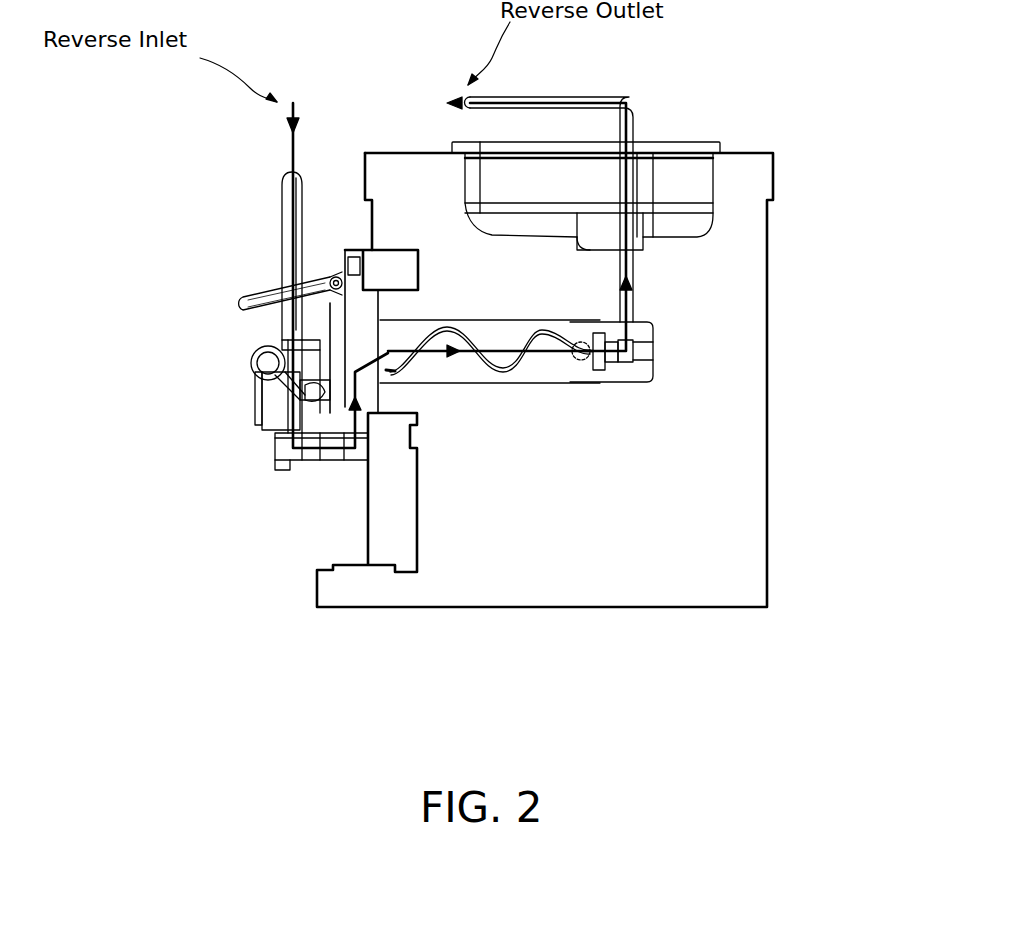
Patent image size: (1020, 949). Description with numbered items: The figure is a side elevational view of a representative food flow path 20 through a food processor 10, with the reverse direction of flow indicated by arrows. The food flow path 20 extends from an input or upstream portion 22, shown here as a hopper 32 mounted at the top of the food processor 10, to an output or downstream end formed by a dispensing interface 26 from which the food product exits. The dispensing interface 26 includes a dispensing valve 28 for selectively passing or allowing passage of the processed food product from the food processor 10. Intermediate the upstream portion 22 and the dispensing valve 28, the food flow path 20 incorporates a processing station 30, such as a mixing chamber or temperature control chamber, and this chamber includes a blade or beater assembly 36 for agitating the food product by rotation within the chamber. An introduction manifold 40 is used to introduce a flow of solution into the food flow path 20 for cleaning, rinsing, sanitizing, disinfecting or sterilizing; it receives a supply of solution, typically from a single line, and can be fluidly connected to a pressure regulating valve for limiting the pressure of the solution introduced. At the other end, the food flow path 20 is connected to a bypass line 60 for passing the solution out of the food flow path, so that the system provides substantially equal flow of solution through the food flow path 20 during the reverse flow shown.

The food processor 10 is at (774, 373).
The food flow path 20 is at (633, 300).
The upstream portion 22 is at (662, 147).
The dispensing interface 26 is at (338, 362).
The dispensing valve 28 is at (307, 272).
The processing station 30 is at (507, 388).
The hopper 32 is at (697, 168).
The blade or beater assembly 36 is at (477, 368).
The introduction manifold 40 is at (243, 397).
The bypass line 60 is at (613, 97).